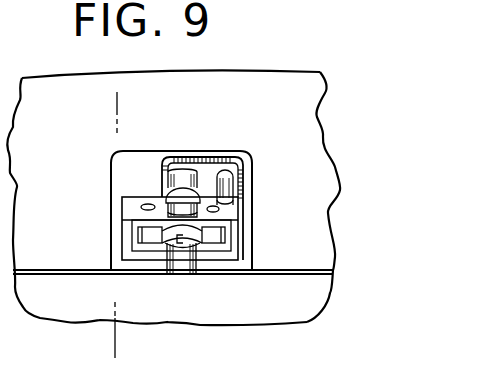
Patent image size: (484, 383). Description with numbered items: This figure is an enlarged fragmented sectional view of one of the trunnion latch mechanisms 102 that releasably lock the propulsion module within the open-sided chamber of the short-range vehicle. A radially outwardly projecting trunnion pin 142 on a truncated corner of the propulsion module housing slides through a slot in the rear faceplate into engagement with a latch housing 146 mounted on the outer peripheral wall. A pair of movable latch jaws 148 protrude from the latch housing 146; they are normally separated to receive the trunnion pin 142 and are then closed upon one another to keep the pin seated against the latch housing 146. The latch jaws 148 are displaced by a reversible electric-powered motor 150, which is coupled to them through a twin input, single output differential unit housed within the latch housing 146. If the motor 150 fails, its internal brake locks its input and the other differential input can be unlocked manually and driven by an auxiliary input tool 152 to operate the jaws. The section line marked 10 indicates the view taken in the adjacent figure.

The section line / view direction 10 is at (106, 100).
The trunnion latch mechanism 102 is at (189, 144).
The reversible electric-powered motor 150 is at (166, 180).
The auxiliary input tool 152 is at (233, 182).
The latch jaws 148 is at (138, 230).
The latch housing 146 is at (127, 249).
The trunnion pin 142 is at (181, 268).